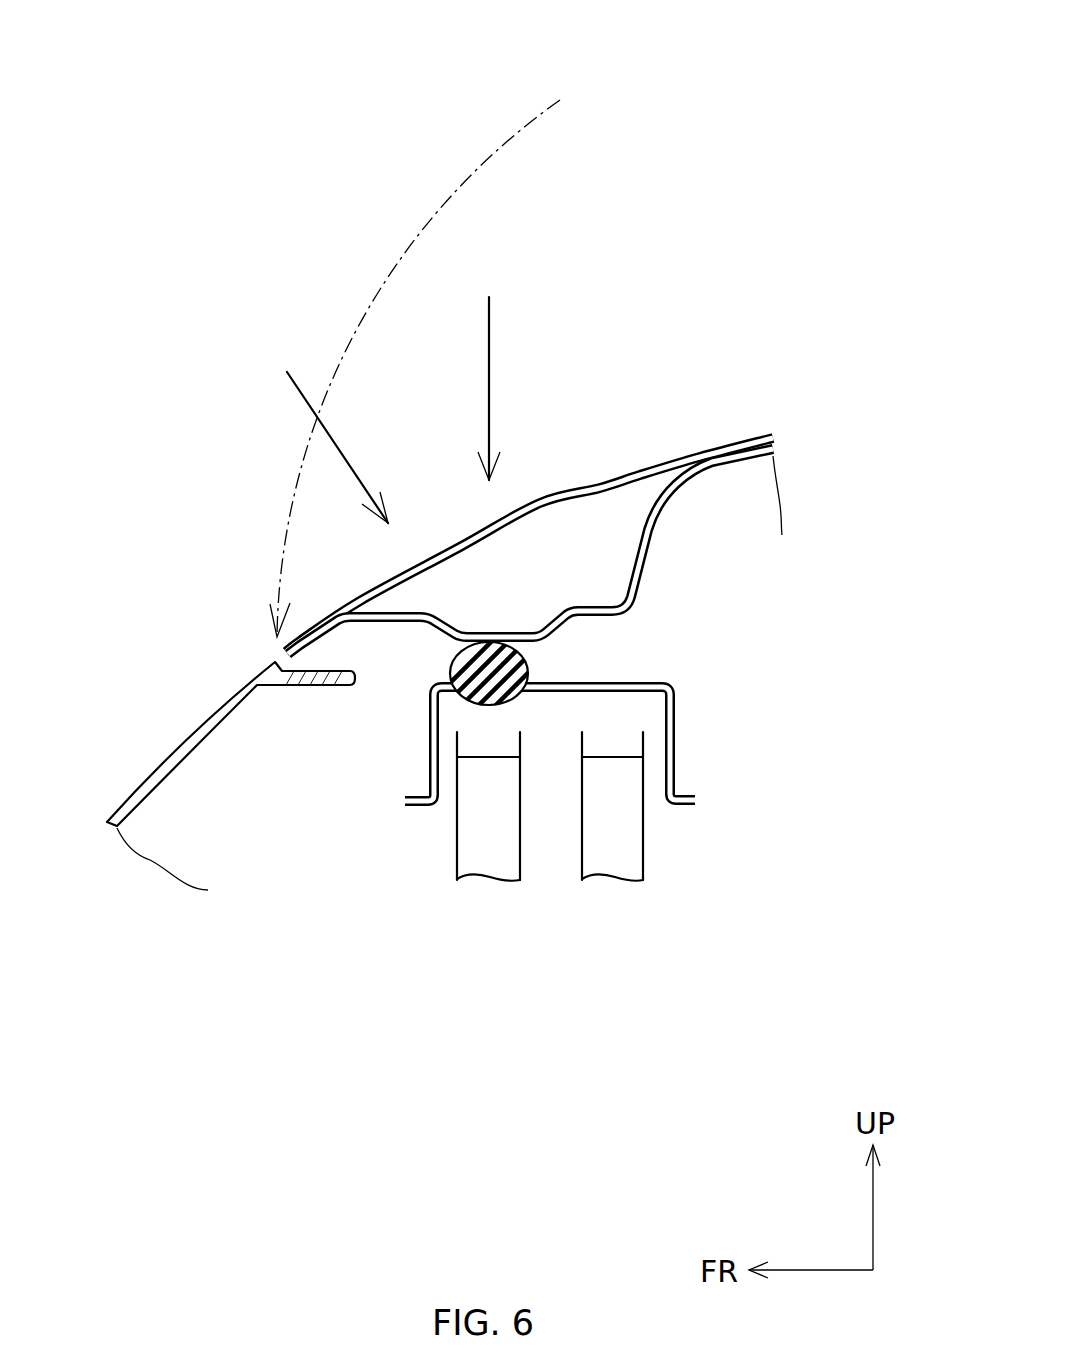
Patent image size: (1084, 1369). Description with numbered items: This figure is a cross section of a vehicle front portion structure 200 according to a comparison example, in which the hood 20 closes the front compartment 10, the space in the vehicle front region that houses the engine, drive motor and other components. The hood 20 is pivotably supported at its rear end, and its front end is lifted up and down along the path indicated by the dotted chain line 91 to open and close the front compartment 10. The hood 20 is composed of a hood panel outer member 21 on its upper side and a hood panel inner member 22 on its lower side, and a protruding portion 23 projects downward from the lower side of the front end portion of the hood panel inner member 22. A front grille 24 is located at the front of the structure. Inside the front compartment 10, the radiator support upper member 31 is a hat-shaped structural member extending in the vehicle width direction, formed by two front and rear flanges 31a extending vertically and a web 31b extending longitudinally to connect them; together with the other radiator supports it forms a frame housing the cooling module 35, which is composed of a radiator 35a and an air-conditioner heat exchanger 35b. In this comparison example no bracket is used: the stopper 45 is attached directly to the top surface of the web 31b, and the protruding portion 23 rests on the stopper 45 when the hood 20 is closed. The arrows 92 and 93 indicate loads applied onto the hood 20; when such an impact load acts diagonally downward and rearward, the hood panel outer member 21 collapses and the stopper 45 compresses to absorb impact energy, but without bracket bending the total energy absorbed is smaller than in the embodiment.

The vehicle front portion structure 200 is at (197, 227).
The dotted chain line 91 is at (497, 152).
The downward load direction 92 is at (490, 368).
The oblique load direction 93 is at (338, 445).
The hood 20 is at (592, 458).
The hood panel outer member 21 is at (702, 444).
The hood panel inner member 22 is at (707, 483).
The protruding portion 23 is at (533, 665).
The front grille 24 is at (173, 740).
The radiator support upper member 31 is at (602, 764).
The flanges 31a is at (673, 728).
The web 31b is at (640, 683).
The stopper 45 is at (450, 667).
The cooling module 35 is at (656, 853).
The radiator 35a is at (643, 861).
The air-conditioner heat exchanger 35b is at (498, 882).
The front compartment 10 is at (712, 1040).